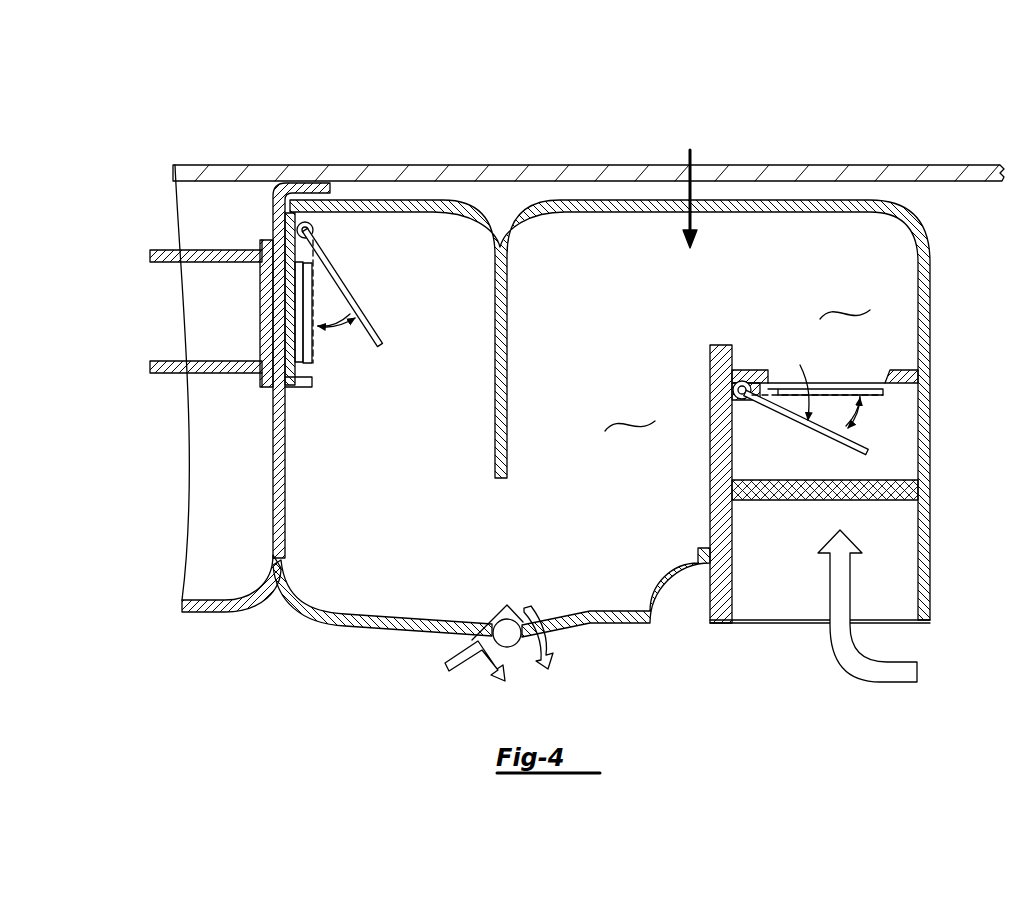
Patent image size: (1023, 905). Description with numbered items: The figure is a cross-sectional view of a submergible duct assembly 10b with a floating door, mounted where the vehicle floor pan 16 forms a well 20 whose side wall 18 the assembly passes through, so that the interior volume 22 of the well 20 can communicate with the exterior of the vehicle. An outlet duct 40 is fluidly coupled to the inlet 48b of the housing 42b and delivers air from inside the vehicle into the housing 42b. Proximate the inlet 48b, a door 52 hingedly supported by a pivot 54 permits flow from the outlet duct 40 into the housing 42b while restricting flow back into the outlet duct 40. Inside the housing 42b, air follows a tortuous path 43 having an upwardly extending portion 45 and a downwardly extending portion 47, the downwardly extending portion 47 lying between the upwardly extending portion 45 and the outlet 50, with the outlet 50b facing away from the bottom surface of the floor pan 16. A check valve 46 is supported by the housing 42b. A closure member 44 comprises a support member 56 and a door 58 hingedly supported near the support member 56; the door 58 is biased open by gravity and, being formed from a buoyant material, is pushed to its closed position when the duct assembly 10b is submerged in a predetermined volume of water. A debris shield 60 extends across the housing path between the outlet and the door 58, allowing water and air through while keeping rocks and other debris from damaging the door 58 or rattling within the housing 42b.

The duct assembly 10b is at (462, 155).
The floor pan 16 is at (955, 165).
The side wall 18 is at (272, 214).
The well 20 is at (195, 605).
The interior volume 22 is at (245, 423).
The outlet duct 40 is at (165, 250).
The housing 42b is at (932, 490).
The tortuous path 43 is at (690, 185).
The closure member 44 is at (795, 380).
The upwardly extending portion 45 is at (491, 518).
The check valve 46 is at (505, 628).
The downwardly extending portion 47 is at (845, 305).
The inlet 48b is at (300, 333).
The outlet 50 is at (805, 240).
The outlet 50b is at (887, 585).
The door 52 is at (368, 298).
The pivot 54 is at (316, 229).
The support member 56 is at (752, 372).
The door 58 is at (825, 440).
The debris shield 60 is at (778, 501).